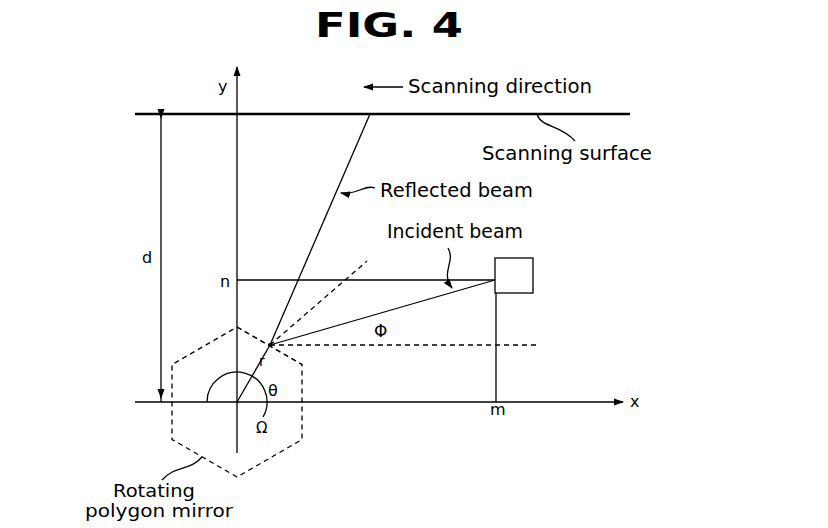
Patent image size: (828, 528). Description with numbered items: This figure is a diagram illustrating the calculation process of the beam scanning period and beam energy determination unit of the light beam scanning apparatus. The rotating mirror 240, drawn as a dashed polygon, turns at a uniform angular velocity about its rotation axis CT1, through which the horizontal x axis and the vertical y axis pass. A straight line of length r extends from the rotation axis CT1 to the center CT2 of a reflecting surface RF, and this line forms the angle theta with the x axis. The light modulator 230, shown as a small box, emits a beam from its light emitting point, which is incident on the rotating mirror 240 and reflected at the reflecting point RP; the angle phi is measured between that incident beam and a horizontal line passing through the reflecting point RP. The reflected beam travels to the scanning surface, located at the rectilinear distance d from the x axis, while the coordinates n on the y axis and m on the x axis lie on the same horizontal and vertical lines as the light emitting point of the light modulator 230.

The light modulator 230 is at (533, 278).
The rotating mirror 240 is at (270, 458).
The reflecting surface RF is at (258, 340).
The reflecting point RP is at (270, 345).
The rotation axis CT1 is at (237, 403).
The center of the reflecting surface CT2 is at (270, 345).